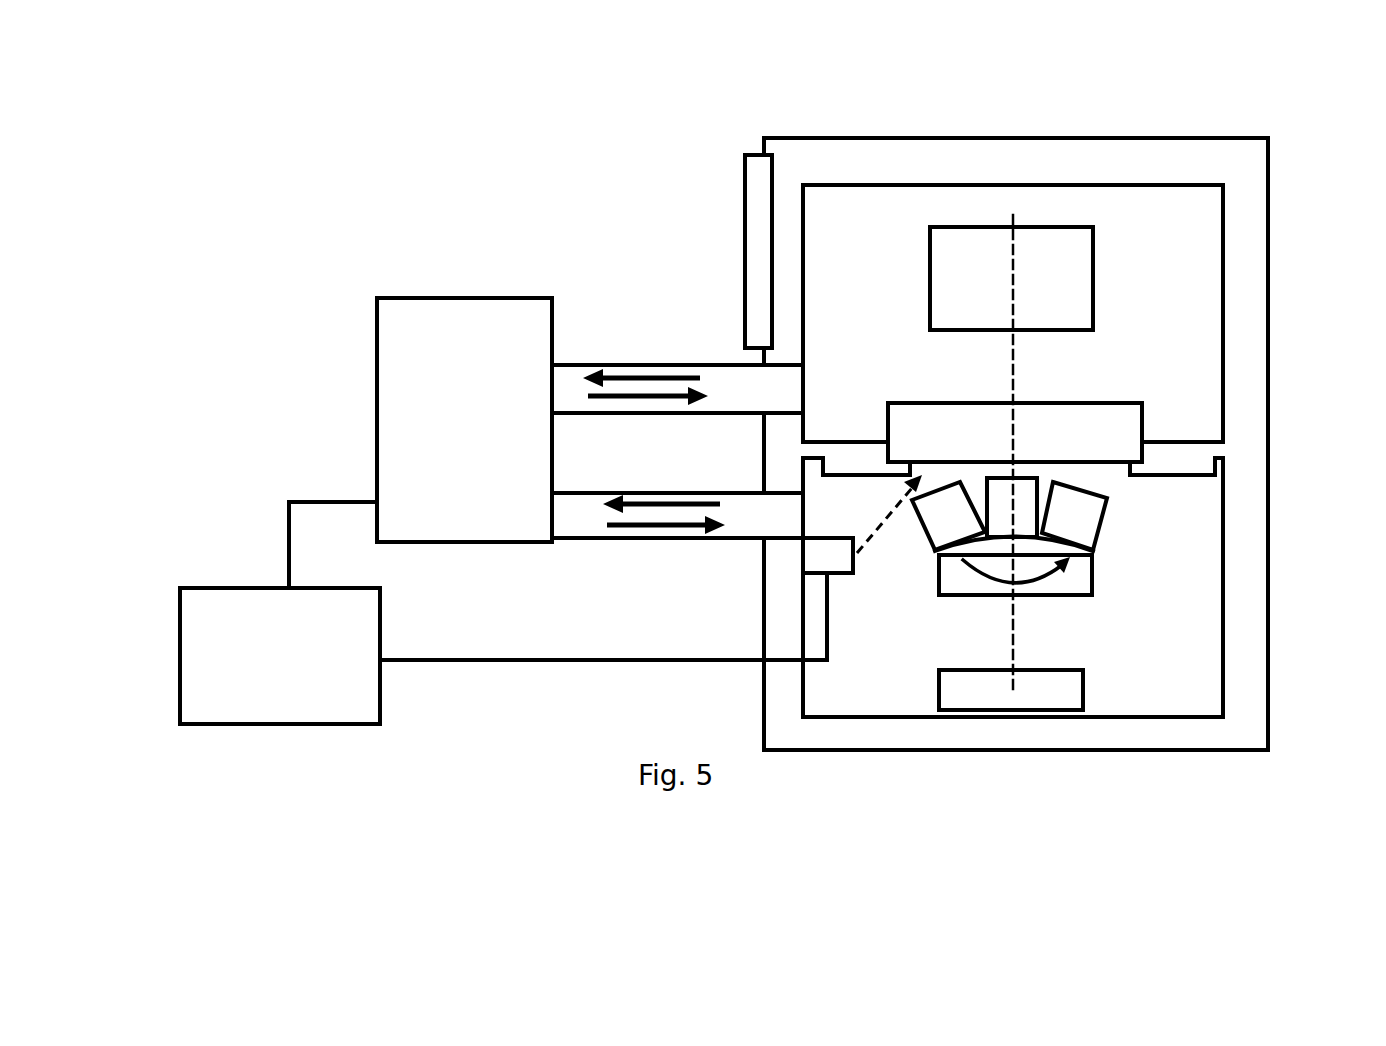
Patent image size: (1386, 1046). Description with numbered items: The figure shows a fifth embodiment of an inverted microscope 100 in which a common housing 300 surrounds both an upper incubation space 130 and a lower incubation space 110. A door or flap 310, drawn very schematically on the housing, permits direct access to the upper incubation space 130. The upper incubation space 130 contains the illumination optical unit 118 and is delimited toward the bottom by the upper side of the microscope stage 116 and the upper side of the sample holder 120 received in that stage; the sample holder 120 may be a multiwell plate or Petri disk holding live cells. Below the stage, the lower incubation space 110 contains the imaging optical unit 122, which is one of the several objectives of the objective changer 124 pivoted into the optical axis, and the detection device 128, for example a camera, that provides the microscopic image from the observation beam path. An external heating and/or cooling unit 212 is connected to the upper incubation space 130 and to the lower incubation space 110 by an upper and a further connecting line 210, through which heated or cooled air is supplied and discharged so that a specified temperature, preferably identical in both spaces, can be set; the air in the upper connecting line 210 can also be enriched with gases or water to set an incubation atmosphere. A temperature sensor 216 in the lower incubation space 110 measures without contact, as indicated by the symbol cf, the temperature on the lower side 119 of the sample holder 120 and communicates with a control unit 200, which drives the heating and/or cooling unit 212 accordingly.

The inverted microscope 100 is at (672, 139).
The common housing 300 is at (1262, 168).
The door or flap 310 is at (753, 232).
The upper incubation space 130 is at (1127, 357).
The lower incubation space 110 is at (1160, 643).
The illumination optical unit 118 is at (1090, 300).
The sample holder 120 is at (1100, 428).
The microscope stage 116 is at (1183, 462).
The lower side of the sample holder 119 is at (1085, 463).
The imaging optical unit 122 is at (1017, 516).
The objective changer 124 is at (1093, 572).
The detection device 128 is at (1070, 697).
The heating and/or cooling unit 212 is at (380, 419).
The control unit 200 is at (212, 628).
The connecting line 210 is at (727, 375).
The temperature sensor 216 is at (817, 558).